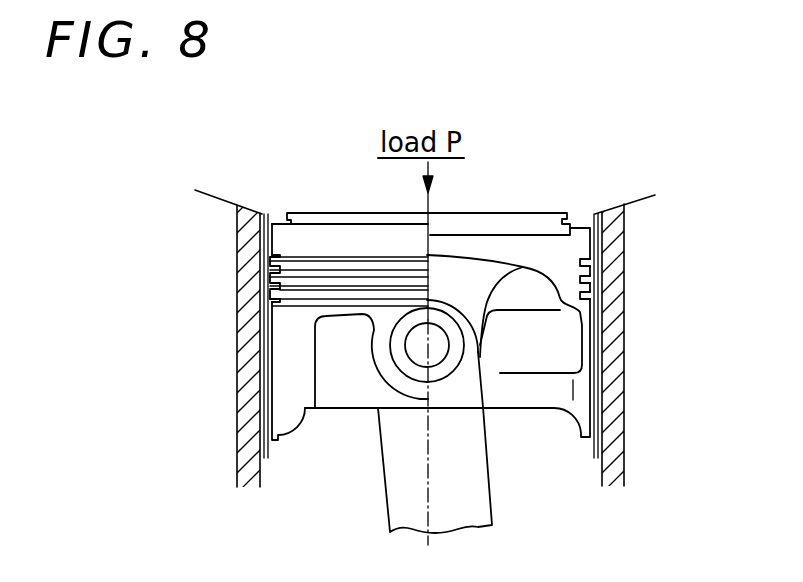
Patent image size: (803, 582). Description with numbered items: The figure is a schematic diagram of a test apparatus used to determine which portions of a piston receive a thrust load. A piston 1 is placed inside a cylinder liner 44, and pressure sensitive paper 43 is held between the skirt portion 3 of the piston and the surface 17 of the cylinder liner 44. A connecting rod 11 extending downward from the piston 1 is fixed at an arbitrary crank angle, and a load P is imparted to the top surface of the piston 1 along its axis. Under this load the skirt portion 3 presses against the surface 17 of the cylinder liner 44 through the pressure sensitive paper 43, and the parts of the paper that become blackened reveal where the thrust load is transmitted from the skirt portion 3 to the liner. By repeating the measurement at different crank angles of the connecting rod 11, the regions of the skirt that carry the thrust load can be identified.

The piston 1 is at (514, 246).
The skirt portion 3 is at (277, 357).
The connecting rod 11 is at (407, 487).
The surface of cylinder liner 17 is at (261, 468).
The pressure sensitive paper 43 is at (268, 297).
The cylinder liner 44 is at (250, 375).